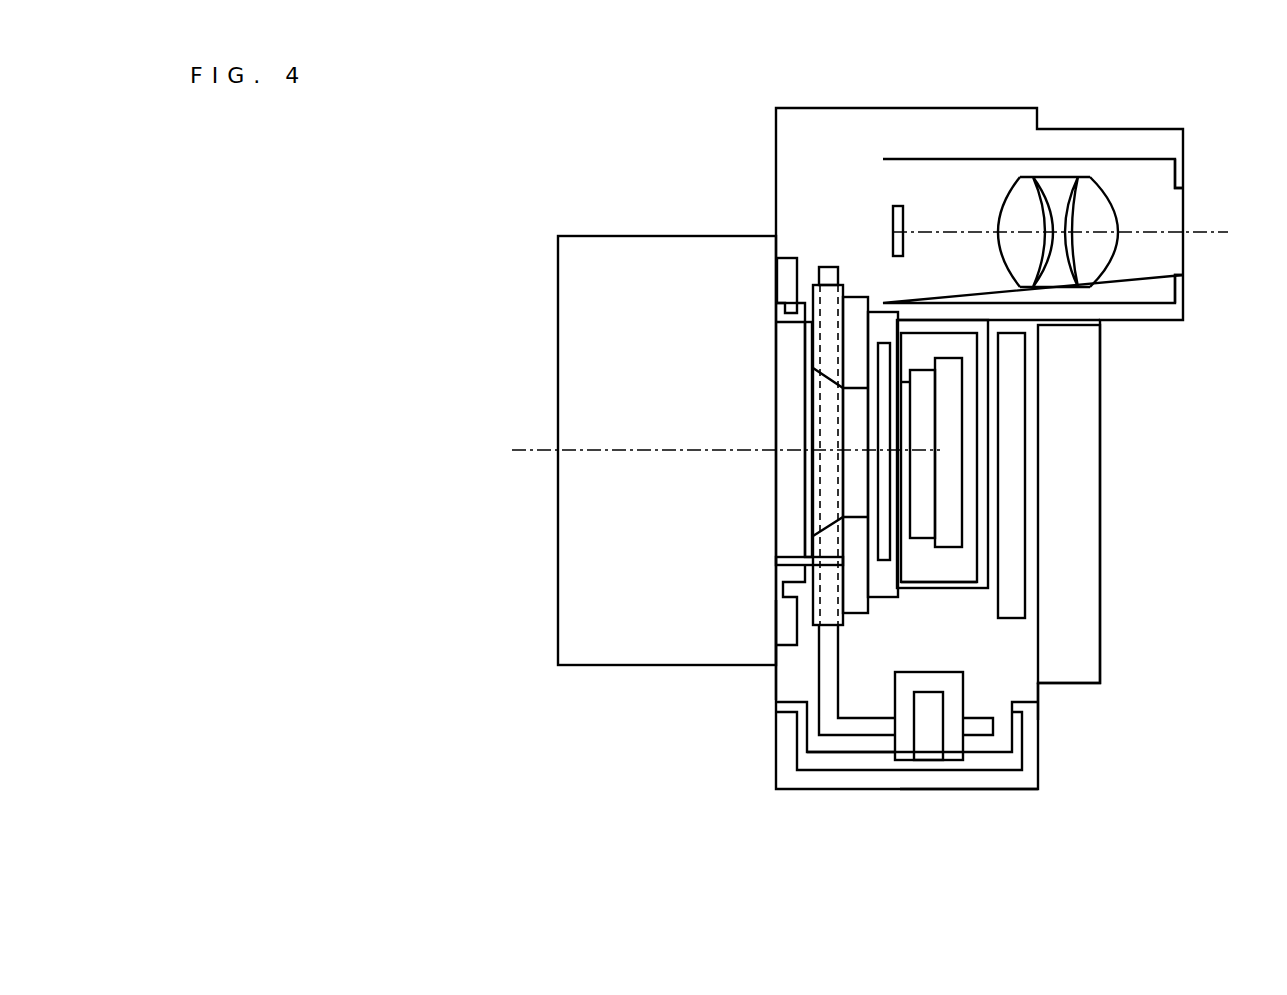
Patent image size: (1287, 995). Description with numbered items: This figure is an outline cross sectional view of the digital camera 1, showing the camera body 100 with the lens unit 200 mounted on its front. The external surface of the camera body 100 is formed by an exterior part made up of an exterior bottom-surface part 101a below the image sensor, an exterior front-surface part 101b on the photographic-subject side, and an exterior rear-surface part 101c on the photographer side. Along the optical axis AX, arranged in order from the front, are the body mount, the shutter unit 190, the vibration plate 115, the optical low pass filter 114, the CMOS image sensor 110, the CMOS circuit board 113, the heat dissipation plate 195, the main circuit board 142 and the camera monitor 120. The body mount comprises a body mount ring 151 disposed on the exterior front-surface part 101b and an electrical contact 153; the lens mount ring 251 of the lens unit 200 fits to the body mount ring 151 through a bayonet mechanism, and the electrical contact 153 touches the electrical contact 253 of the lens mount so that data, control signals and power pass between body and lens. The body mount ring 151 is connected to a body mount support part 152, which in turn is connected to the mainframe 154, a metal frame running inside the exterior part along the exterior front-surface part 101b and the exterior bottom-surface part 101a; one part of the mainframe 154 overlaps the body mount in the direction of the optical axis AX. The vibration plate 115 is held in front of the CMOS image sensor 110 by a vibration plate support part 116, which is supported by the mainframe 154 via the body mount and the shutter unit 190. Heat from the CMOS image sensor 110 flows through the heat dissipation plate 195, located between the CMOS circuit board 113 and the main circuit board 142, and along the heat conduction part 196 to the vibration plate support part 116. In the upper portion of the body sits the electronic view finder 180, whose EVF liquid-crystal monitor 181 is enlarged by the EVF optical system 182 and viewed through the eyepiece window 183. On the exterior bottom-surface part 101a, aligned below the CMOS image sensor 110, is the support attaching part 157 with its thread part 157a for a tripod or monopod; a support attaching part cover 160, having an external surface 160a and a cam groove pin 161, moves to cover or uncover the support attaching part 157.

The digital camera 1 is at (515, 175).
The camera body 100 is at (960, 84).
The exterior bottom-surface part 101a is at (843, 753).
The exterior front-surface part 101b is at (773, 672).
The exterior rear-surface part 101c is at (1040, 692).
The CMOS image sensor 110 is at (925, 493).
The CMOS circuit board 113 is at (950, 465).
The optical low pass filter 114 is at (900, 497).
The vibration plate 115 is at (875, 523).
The vibration plate support part 116 is at (877, 565).
The camera monitor 120 is at (1077, 388).
The main circuit board 142 is at (1008, 437).
The body mount ring 151 is at (787, 275).
The body mount support part 152 is at (815, 600).
The electrical contact 153 is at (780, 578).
The mainframe 154 is at (829, 268).
The support attaching part 157 is at (952, 752).
The thread part 157a is at (923, 752).
The support attaching part cover 160 is at (862, 779).
The support attaching part cover external surface 160a is at (993, 793).
The cam groove pin 161 is at (1017, 732).
The electronic view finder 180 is at (1166, 217).
The EVF liquid-crystal monitor 181 is at (905, 220).
The EVF optical system 182 is at (1028, 198).
The eyepiece window 183 is at (1185, 167).
The shutter unit 190 is at (856, 550).
The heat dissipation plate 195 is at (980, 352).
The heat conduction part 196 is at (960, 325).
The lens unit 200 is at (556, 325).
The lens mount ring 251 is at (780, 310).
The electrical contact 253 is at (783, 560).
The optical axis AX is at (528, 448).